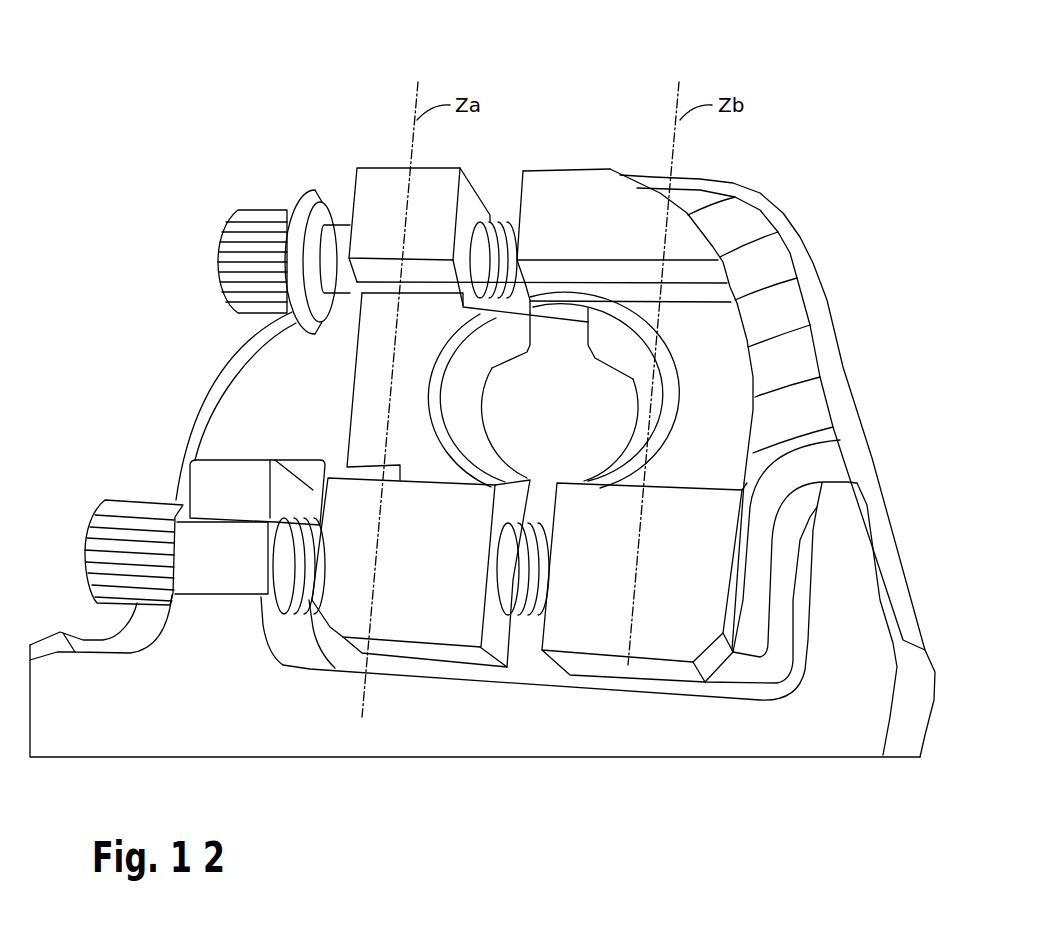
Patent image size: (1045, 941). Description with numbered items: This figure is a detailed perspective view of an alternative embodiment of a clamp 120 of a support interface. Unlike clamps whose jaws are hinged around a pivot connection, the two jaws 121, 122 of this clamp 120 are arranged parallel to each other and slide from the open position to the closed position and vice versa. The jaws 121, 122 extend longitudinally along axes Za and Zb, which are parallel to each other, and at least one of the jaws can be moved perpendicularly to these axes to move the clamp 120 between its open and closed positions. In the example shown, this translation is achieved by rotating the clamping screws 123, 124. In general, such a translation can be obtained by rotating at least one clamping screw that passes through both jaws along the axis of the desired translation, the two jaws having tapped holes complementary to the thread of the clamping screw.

The clamp 120 is at (482, 56).
The jaw 121 is at (379, 183).
The jaw 122 is at (584, 183).
The clamping screw 123 is at (228, 256).
The clamping screw 124 is at (92, 556).